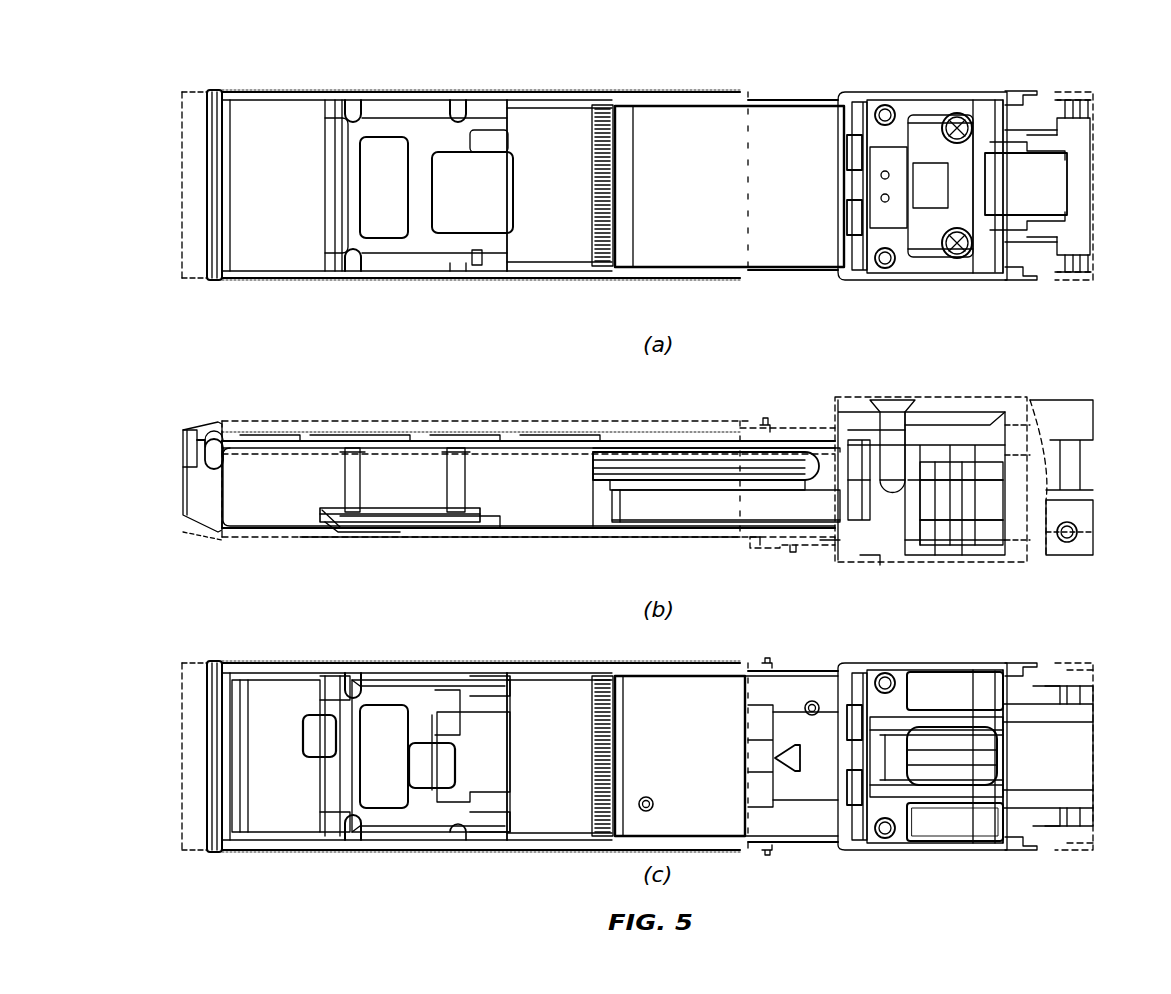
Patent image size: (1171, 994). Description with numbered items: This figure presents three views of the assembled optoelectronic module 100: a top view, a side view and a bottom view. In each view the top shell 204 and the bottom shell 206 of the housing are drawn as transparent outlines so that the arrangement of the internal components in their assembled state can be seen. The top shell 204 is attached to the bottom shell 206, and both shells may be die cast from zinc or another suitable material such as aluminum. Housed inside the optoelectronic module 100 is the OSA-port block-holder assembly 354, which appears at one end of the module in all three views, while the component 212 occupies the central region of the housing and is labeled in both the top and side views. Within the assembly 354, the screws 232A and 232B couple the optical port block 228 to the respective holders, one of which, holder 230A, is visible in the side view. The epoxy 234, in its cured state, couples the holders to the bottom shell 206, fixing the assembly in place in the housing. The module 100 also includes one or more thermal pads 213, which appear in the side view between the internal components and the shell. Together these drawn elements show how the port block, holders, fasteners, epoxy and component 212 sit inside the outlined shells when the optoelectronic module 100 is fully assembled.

The optoelectronic module 100 is at (237, 88).
The OSA-port block-holder assembly 354 is at (1095, 62).
The screw 232B is at (964, 118).
The screw 232A is at (962, 256).
The optical port block 228 is at (1078, 192).
The optical subassembly housing 212 is at (683, 243).
The epoxy 234 is at (918, 262).
The top shell 204 is at (296, 422).
The bottom shell 206 is at (296, 537).
The thermal pad 213 is at (557, 525).
The holder 230A is at (927, 505).